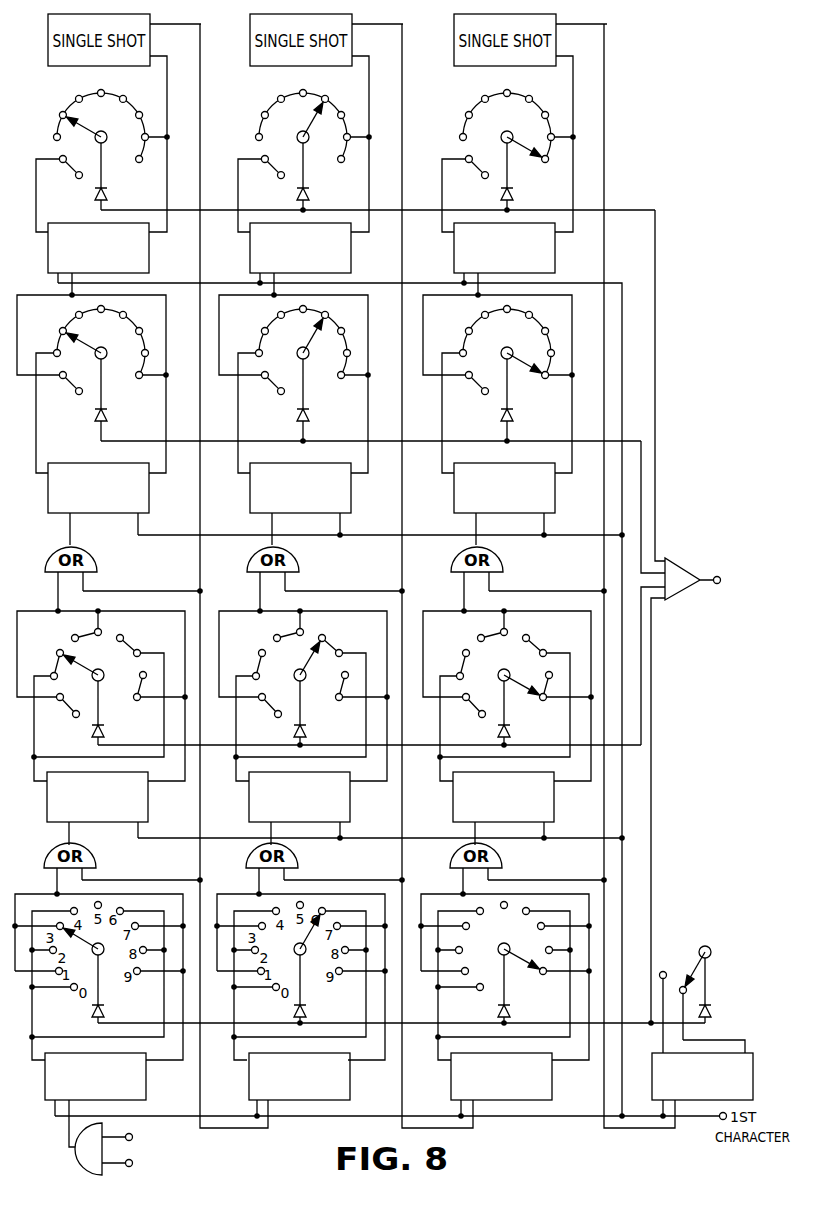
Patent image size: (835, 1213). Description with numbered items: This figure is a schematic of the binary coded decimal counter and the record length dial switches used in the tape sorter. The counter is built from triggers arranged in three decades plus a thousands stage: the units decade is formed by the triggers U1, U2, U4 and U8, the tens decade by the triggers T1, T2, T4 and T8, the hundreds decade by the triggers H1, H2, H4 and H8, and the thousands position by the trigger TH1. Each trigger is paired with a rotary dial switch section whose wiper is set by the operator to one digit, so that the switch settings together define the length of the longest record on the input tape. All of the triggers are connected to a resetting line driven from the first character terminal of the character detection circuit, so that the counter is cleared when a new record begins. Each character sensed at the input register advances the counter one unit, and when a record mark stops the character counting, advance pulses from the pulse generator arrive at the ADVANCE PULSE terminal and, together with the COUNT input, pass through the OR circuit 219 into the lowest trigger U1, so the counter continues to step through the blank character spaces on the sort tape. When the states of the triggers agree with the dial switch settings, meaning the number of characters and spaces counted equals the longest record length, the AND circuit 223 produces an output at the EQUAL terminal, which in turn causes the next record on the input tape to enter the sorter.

The trigger U8 is at (149, 252).
The trigger T8 is at (351, 252).
The trigger H8 is at (555, 252).
The trigger U4 is at (149, 492).
The trigger T4 is at (351, 492).
The trigger H4 is at (555, 492).
The trigger U2 is at (148, 800).
The trigger T2 is at (350, 800).
The trigger H2 is at (554, 800).
The trigger U1 is at (146, 1080).
The trigger T1 is at (350, 1080).
The trigger H1 is at (552, 1080).
The trigger TH1 is at (753, 1078).
The AND circuit 223 is at (682, 566).
The OR circuit 219 is at (78, 1159).